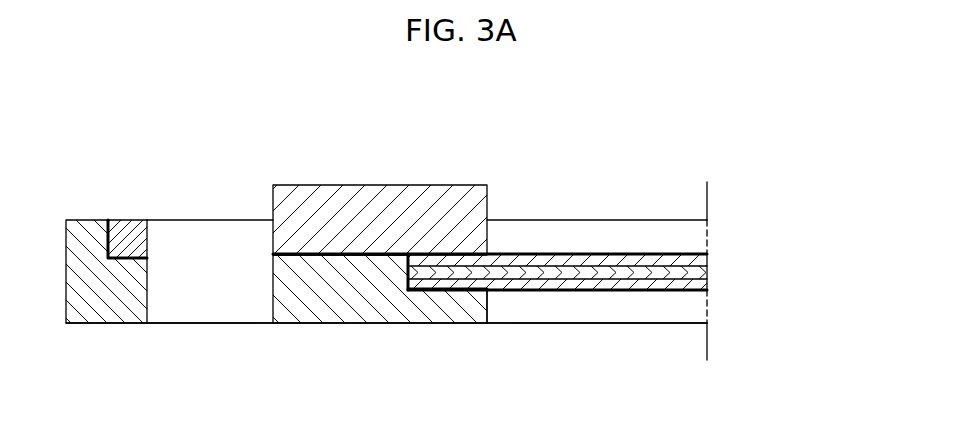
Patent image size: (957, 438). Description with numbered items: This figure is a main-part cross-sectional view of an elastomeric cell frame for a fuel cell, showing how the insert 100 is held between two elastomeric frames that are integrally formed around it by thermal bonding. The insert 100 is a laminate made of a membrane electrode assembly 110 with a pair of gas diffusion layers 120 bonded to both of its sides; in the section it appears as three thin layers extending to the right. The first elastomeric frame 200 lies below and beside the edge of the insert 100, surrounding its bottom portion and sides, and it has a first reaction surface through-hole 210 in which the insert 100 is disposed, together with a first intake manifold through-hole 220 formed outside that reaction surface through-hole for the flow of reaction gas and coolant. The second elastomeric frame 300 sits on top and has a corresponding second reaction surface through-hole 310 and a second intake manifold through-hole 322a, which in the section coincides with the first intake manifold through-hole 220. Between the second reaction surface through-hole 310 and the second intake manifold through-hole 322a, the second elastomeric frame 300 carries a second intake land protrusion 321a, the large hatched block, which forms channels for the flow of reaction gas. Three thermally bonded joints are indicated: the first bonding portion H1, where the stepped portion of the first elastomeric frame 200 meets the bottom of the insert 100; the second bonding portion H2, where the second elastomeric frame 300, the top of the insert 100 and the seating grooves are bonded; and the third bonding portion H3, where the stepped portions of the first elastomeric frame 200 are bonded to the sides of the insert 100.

The insert 100 is at (637, 277).
The membrane electrode assembly 110 is at (702, 270).
The gas diffusion layers 120 is at (702, 258).
The first elastomeric frame 200 is at (112, 303).
The first reaction surface through-hole 210 is at (600, 305).
The first intake manifold through-hole 220 is at (210, 311).
The second intake manifold through-hole 322a is at (224, 300).
The second elastomeric frame 300 is at (490, 181).
The second reaction surface through-hole 310 is at (657, 235).
The second intake land protrusion 321a is at (338, 185).
The first bonding portion H1 is at (463, 290).
The second bonding portion H2 is at (123, 255).
The third bonding portion H3 is at (407, 273).